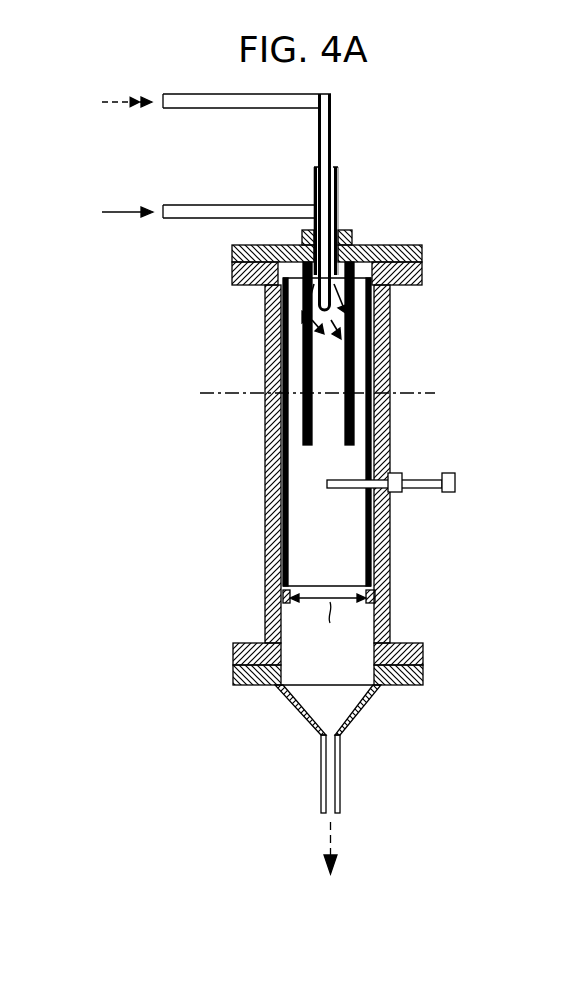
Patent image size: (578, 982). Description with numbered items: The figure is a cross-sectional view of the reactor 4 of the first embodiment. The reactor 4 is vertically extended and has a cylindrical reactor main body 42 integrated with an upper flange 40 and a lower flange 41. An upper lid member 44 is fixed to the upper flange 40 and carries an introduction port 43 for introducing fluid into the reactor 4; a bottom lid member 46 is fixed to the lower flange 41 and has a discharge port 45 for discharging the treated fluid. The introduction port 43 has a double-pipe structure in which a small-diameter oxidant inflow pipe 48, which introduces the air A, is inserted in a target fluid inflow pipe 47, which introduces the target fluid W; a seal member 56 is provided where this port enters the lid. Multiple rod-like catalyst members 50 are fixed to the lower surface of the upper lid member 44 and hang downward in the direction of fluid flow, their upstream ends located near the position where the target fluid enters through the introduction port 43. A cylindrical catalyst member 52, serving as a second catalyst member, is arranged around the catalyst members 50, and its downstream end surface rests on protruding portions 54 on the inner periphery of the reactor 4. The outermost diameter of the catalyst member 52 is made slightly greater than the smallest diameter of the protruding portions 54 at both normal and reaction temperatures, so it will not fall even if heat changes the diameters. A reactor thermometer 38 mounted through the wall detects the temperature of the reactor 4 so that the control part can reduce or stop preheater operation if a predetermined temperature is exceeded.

The reactor 4 is at (526, 270).
The reactor thermometer 38 is at (456, 482).
The upper flange 40 is at (422, 270).
The lower flange 41 is at (423, 652).
The reactor main body 42 is at (265, 506).
The introduction port 43 is at (344, 207).
The upper lid member 44 is at (232, 255).
The discharge port 45 is at (341, 772).
The bottom lid member 46 is at (233, 674).
The target fluid inflow pipe 47 is at (314, 186).
The oxidant inflow pipe 48 is at (331, 130).
The catalyst members 50 is at (303, 376).
The cylindrical catalyst member 52 is at (371, 432).
The protruding portions 54 is at (283, 596).
The seal member 56 is at (350, 232).